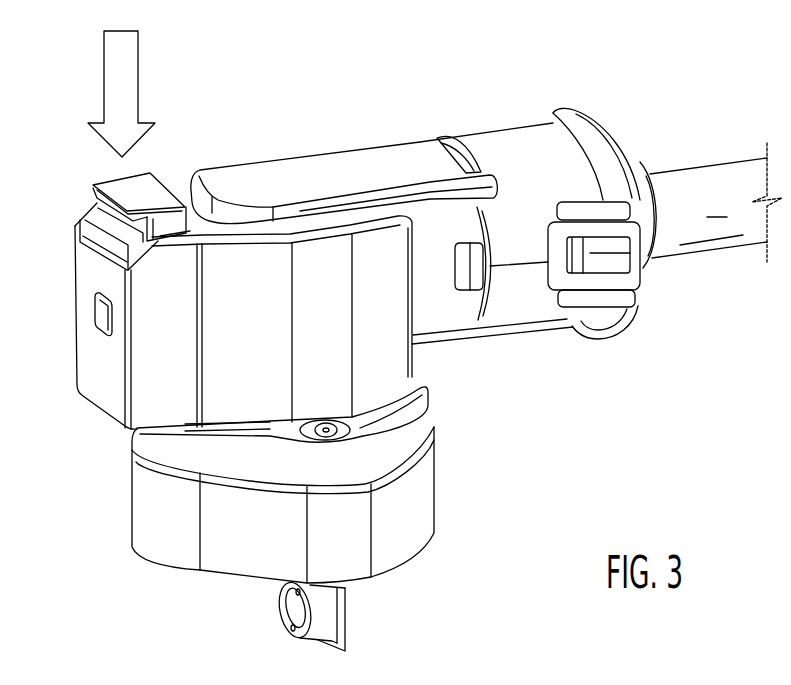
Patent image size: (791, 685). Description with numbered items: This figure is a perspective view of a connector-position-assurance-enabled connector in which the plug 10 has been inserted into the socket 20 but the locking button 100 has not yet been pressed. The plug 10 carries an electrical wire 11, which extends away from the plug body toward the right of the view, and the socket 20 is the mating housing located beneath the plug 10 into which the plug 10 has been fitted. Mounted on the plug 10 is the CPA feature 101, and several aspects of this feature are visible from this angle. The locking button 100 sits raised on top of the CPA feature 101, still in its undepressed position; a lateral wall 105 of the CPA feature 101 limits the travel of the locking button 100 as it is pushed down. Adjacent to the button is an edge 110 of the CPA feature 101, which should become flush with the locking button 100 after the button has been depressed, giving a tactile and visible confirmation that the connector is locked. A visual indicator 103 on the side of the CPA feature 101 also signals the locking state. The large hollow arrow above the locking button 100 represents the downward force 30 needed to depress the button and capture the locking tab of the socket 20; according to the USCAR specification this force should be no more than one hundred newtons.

The plug 10 is at (312, 107).
The electrical wire 11 is at (703, 188).
The socket 20 is at (96, 494).
The downward force 30 is at (105, 81).
The locking button 100 is at (123, 190).
The CPA feature 101 is at (93, 352).
The visual indicator 103 is at (103, 312).
The lateral wall 105 is at (105, 216).
The edge 110 is at (171, 237).